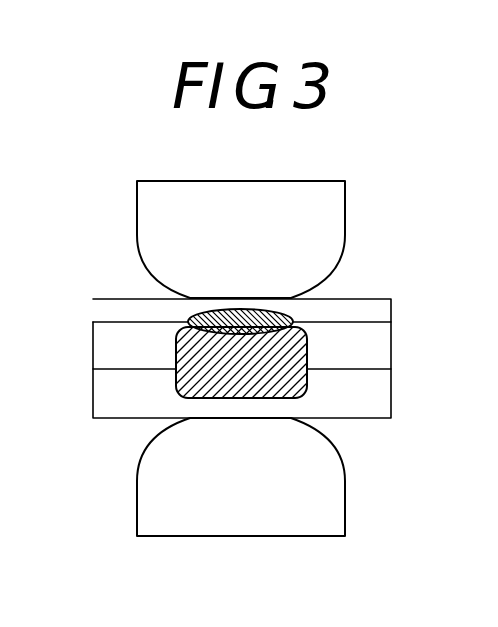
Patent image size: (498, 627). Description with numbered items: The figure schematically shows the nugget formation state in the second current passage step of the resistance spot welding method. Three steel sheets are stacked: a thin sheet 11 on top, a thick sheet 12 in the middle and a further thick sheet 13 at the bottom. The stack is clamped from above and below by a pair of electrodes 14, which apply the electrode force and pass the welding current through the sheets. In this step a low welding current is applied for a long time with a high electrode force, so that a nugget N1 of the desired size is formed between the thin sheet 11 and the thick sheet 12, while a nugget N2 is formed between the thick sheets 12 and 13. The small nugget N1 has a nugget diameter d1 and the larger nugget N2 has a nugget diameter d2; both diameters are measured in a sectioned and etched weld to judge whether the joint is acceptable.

The electrode 14 is at (332, 202).
The thin sheet 11 is at (383, 311).
The thick sheet 12 is at (385, 348).
The thick sheet 13 is at (385, 400).
The nugget N1 is at (283, 312).
The nugget N2 is at (176, 350).
The nugget diameter d1 is at (293, 334).
The nugget diameter d2 is at (176, 398).